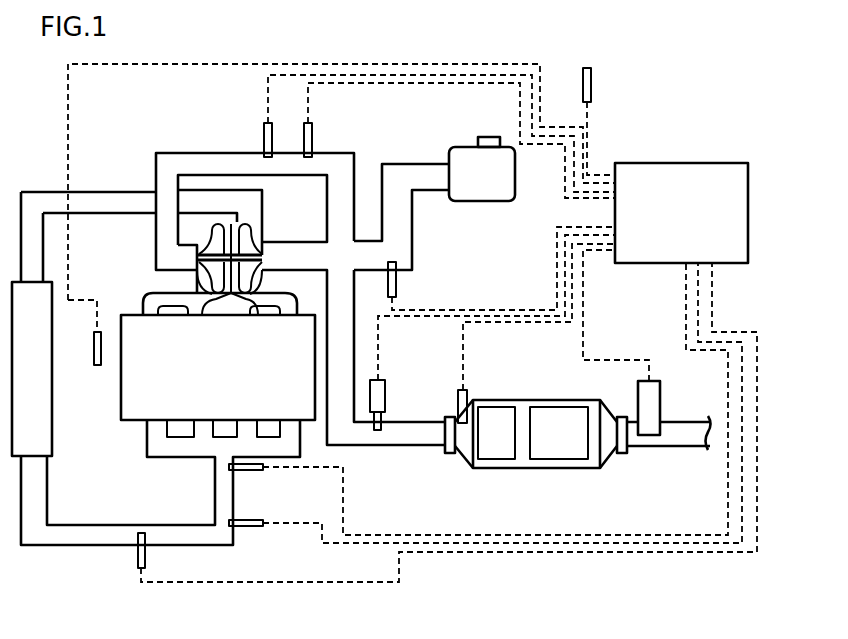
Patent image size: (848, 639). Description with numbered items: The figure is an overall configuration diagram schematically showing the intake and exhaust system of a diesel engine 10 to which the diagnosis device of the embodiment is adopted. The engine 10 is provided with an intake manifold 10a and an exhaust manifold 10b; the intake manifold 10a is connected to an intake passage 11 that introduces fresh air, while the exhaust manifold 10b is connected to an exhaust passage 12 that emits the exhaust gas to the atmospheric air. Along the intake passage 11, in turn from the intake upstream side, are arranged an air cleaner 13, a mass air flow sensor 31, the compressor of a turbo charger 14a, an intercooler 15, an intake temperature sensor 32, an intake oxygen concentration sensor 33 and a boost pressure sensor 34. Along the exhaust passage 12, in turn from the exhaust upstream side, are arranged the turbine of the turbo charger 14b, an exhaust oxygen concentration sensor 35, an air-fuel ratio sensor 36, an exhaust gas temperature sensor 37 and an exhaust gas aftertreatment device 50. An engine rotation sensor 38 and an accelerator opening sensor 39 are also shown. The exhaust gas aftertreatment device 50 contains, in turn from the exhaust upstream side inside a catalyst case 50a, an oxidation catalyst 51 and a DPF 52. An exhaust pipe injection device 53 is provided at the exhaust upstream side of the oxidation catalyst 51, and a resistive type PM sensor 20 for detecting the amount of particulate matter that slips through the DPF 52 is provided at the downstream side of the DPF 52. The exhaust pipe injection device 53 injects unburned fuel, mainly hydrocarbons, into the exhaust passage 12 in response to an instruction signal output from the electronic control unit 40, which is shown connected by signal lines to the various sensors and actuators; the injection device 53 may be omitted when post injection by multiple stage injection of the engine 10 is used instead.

The diesel engine 10 is at (218, 376).
The intake manifold 10a is at (148, 444).
The exhaust manifold 10b is at (146, 296).
The intake passage 11 is at (94, 190).
The exhaust passage 12 is at (278, 277).
The air cleaner 13 is at (480, 203).
The compressor of turbo charger 14a is at (248, 236).
The turbine of turbo charger 14b is at (198, 237).
The intercooler 15 is at (32, 369).
The resistive type PM sensor 20 is at (638, 399).
The mass air flow (MAF) sensor 31 is at (397, 280).
The intake temperature sensor 32 is at (141, 564).
The intake oxygen concentration sensor 33 is at (250, 527).
The boost pressure sensor 34 is at (245, 472).
The exhaust oxygen concentration sensor 35 is at (264, 126).
The air-fuel ratio sensor 36 is at (304, 126).
The exhaust gas temperature sensor 37 is at (458, 394).
The engine rotation sensor 38 is at (96, 366).
The accelerator opening sensor 39 is at (592, 80).
The electronic control unit (ECU) 40 is at (697, 163).
The exhaust gas aftertreatment device 50 is at (536, 463).
The catalyst case 50a is at (495, 468).
The oxidation catalyst (DOC) 51 is at (496, 433).
The DPF 52 is at (559, 433).
The exhaust pipe injection device 53 is at (385, 387).